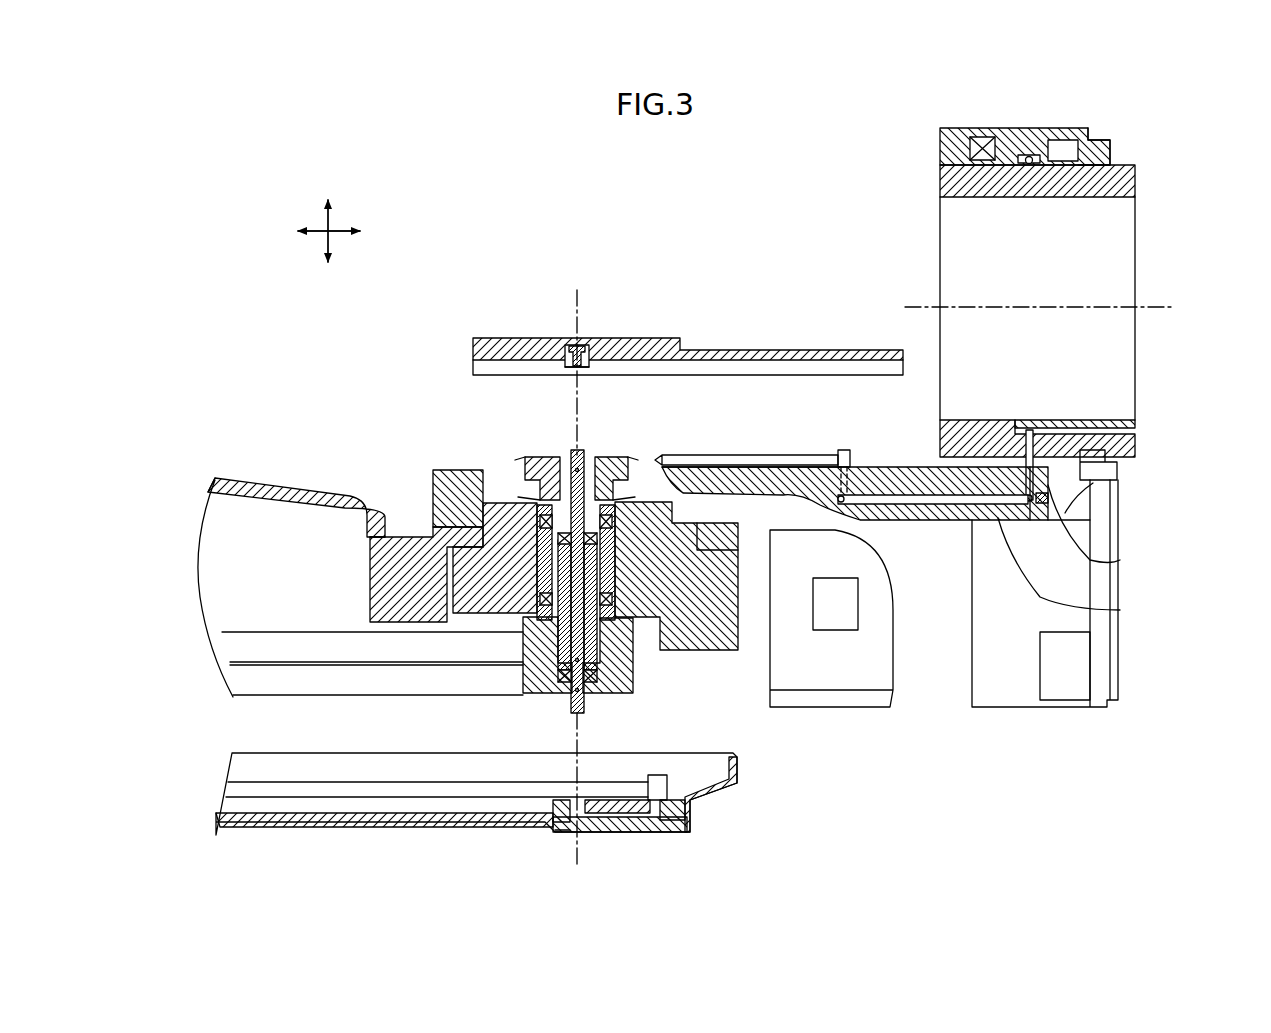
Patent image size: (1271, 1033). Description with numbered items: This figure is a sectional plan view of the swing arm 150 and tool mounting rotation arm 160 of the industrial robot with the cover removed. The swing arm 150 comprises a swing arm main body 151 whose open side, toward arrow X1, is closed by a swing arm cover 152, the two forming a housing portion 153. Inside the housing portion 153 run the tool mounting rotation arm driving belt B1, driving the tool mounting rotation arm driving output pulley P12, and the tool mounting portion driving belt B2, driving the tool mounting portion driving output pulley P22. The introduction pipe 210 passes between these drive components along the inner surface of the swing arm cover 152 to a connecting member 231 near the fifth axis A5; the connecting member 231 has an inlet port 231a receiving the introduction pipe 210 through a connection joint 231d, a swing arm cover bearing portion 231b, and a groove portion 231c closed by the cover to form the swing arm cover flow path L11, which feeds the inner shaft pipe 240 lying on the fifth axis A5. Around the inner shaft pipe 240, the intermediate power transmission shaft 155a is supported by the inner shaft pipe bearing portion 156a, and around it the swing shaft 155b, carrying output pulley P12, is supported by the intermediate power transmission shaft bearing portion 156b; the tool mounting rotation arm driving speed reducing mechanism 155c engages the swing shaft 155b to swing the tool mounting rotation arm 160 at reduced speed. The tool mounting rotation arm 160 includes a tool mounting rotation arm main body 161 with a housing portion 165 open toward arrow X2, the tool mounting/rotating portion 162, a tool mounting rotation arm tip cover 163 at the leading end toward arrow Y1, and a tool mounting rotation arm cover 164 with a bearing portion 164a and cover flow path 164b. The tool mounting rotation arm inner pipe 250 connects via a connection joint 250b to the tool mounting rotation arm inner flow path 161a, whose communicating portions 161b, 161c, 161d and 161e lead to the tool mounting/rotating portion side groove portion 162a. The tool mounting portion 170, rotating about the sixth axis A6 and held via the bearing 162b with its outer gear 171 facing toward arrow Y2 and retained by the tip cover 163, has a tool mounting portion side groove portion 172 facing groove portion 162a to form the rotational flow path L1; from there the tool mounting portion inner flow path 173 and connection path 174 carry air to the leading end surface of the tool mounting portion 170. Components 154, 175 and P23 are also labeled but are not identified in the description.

The swing arm 150 is at (440, 562).
The swing arm main body 151 is at (295, 490).
The swing arm cover 152 is at (300, 826).
The housing portion 153 is at (240, 548).
The block 154 is at (430, 490).
The intermediate power transmission shaft 155a is at (660, 625).
The swing shaft 155b is at (540, 520).
The tool mounting rotation arm driving speed reducing mechanism 155c is at (495, 510).
The inner shaft pipe bearing portion 156a is at (633, 688).
The intermediate power transmission shaft bearing portion 156b is at (523, 655).
The tool mounting rotation arm 160 is at (1012, 712).
The tool mounting rotation arm main body 161 is at (924, 493).
The tool mounting rotation arm inner flow path 161a is at (880, 492).
The communicating portion 161b is at (843, 465).
The communicating portion 161c is at (775, 470).
The communicating portion 161d is at (884, 492).
The communicating portion 161e is at (1090, 560).
The tool mounting/rotating portion 162 is at (994, 170).
The tool mounting/rotating portion side groove portion 162a is at (1060, 148).
The bearing 162b is at (980, 148).
The tool mounting rotation arm tip cover 163 is at (1120, 474).
The tool mounting rotation arm cover 164 is at (688, 355).
The tool mounting rotation arm cover bearing portion 164a is at (577, 370).
The tool mounting rotation arm cover flow path 164b is at (566, 345).
The housing portion 165 is at (628, 470).
The tool mounting portion 170 is at (1055, 297).
The outer gear 171 is at (1110, 152).
The tool mounting portion side groove portion 172 is at (965, 185).
The tool mounting portion inner flow path 173 is at (1030, 432).
The connection path 174 is at (1130, 432).
The cylinder 175 is at (965, 198).
The introduction pipe 210 is at (491, 801).
The connecting member 231 is at (639, 801).
The inlet port 231a is at (692, 820).
The swing arm cover bearing portion 231b is at (560, 800).
The groove portion 231c is at (635, 830).
The connection joint 231d is at (660, 778).
The inner shaft pipe 240 is at (585, 712).
The tool mounting rotation arm inner pipe 250 is at (752, 421).
The connection joint 250b is at (840, 450).
The fifth axis A5 is at (577, 285).
The sixth axis A6 is at (1168, 305).
The tool mounting rotation arm driving belt B1 is at (310, 655).
The tool mounting portion driving belt B2 is at (380, 680).
The rotational flow path L1 is at (1029, 165).
The swing arm cover flow path L11 is at (563, 832).
The tool mounting rotation arm driving output pulley P12 is at (530, 672).
The tool mounting portion driving output pulley P22 is at (615, 690).
The point P23 is at (600, 455).
The arrow X1 is at (328, 242).
The arrow X2 is at (328, 217).
The arrow Y1 is at (344, 231).
The arrow Y2 is at (313, 231).